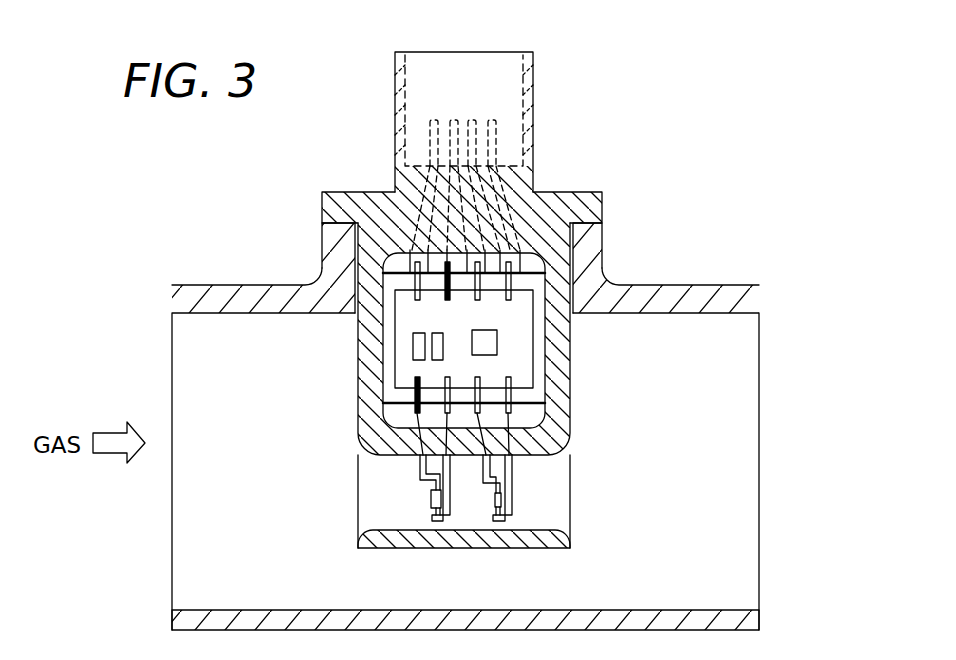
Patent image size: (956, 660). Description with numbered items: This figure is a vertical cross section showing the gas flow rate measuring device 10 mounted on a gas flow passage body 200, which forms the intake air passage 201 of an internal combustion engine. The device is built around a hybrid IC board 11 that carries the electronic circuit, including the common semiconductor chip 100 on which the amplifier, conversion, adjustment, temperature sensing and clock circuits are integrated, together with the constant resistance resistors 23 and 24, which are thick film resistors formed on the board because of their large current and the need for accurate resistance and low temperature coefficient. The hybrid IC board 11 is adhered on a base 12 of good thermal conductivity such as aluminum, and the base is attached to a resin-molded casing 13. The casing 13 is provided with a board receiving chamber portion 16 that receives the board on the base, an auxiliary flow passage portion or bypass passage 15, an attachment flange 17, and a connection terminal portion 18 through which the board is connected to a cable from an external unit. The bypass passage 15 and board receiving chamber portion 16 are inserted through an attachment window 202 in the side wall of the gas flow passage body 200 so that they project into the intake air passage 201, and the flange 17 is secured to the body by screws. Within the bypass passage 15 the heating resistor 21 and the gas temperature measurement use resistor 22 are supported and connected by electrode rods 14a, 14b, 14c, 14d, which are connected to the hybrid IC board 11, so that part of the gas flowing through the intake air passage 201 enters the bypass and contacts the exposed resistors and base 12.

The gas flow rate measuring device 10 is at (548, 145).
The hybrid IC board 11 is at (523, 363).
The base 12 is at (540, 273).
The casing 13 is at (363, 190).
The electrode rod 14a is at (515, 490).
The electrode rod 14b is at (482, 477).
The electrode rod 14c is at (445, 522).
The electrode rod 14d is at (422, 470).
The auxiliary flow passage portion 15 is at (558, 485).
The board receiving chamber portion 16 is at (357, 382).
The attachment flange 17 is at (570, 205).
The connection terminal portion 18 is at (463, 115).
The heating resistor 21 is at (497, 518).
The gas temperature measurement use resistor 22 is at (432, 520).
The constant resistance resistor 23 is at (438, 340).
The constant resistance resistor 24 is at (415, 340).
The semiconductor chip 100 is at (513, 327).
The gas flow passage body 200 is at (197, 618).
The intake air passage 201 is at (193, 348).
The attachment window 202 is at (353, 287).